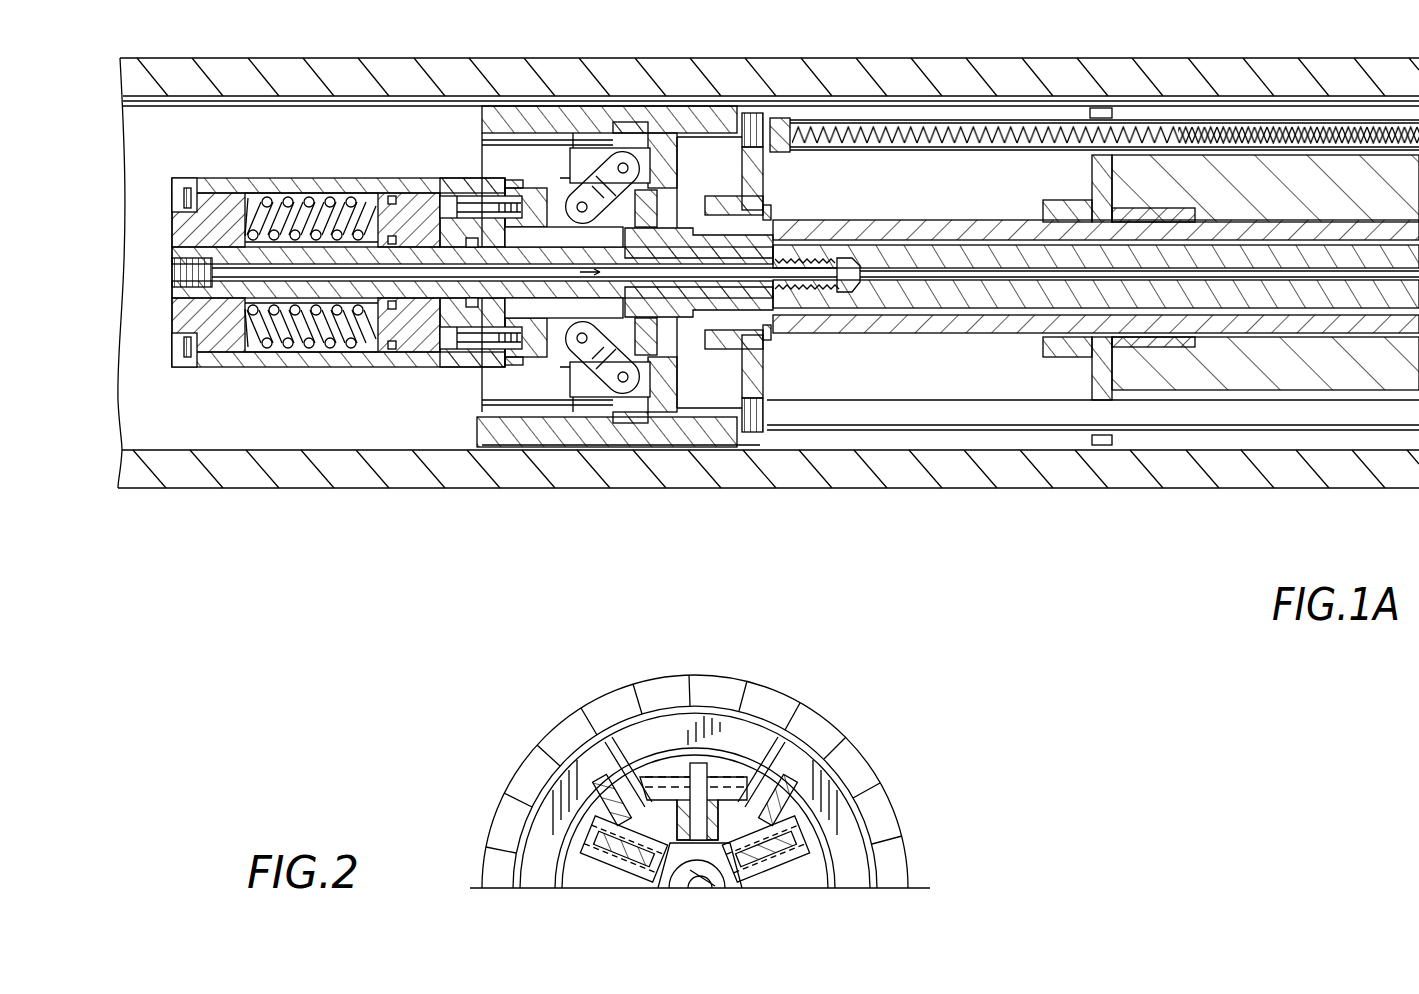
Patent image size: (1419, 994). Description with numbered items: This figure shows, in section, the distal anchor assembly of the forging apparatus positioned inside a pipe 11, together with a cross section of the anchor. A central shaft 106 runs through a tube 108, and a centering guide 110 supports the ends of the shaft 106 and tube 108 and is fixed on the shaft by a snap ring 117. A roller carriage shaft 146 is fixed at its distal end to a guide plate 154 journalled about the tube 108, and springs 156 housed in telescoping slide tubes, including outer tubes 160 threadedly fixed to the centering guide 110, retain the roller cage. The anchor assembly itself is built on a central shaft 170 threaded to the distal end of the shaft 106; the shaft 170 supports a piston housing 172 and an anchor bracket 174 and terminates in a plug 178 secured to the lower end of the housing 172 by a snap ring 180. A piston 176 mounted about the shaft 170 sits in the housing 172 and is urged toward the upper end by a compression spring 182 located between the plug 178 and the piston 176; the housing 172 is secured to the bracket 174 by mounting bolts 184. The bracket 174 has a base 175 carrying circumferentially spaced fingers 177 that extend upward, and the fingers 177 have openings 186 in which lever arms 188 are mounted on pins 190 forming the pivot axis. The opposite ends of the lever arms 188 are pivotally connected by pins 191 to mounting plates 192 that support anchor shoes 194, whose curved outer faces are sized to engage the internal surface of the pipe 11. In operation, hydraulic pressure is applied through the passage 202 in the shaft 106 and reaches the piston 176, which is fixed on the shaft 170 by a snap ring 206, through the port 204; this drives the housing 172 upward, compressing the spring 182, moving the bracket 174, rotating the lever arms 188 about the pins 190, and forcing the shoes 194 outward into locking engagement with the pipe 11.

In FIG. 1A, the pipe 11 is at (895, 60).
In FIG. 2, the pipe 11 is at (905, 853).
In FIG. 1A, the central shaft 106 is at (975, 300).
In FIG. 1A, the tube 108 is at (888, 330).
In FIG. 1A, the centering guide 110 is at (766, 395).
In FIG. 1A, the snap ring 117 is at (770, 215).
In FIG. 1A, the shaft 146 is at (1200, 380).
In FIG. 1A, the guide plate 154 is at (1095, 380).
In FIG. 1A, the springs 156 is at (1012, 128).
In FIG. 1A, the outer tubes 160 is at (1138, 120).
In FIG. 1A, the central shaft 170 is at (670, 238).
In FIG. 1A, the piston housing 172 is at (232, 195).
In FIG. 1A, the anchor bracket 174 is at (549, 176).
In FIG. 2, the anchor bracket 174 is at (600, 760).
In FIG. 1A, the base 175 is at (528, 182).
In FIG. 1A, the piston 176 is at (393, 207).
In FIG. 1A, the fingers 177 is at (670, 105).
In FIG. 1A, the plug 178 is at (415, 190).
In FIG. 1A, the snap ring 180 is at (193, 190).
In FIG. 1A, the compression spring 182 is at (270, 337).
In FIG. 1A, the mounting bolts 184 is at (470, 350).
In FIG. 1A, the openings 186 is at (557, 353).
In FIG. 1A, the lever arms 188 is at (632, 368).
In FIG. 2, the lever arms 188 is at (728, 750).
In FIG. 1A, the pins 190 is at (578, 355).
In FIG. 2, the pins 190 is at (718, 822).
In FIG. 1A, the pins 191 is at (623, 407).
In FIG. 2, the pins 191 is at (660, 755).
In FIG. 1A, the mounting plates 192 is at (665, 417).
In FIG. 1A, the anchor shoes 194 is at (500, 440).
In FIG. 2, the anchor shoes 194 is at (555, 808).
In FIG. 1A, the passage 202 is at (1340, 290).
In FIG. 1A, the port 204 is at (415, 345).
In FIG. 1A, the snap ring 206 is at (373, 308).